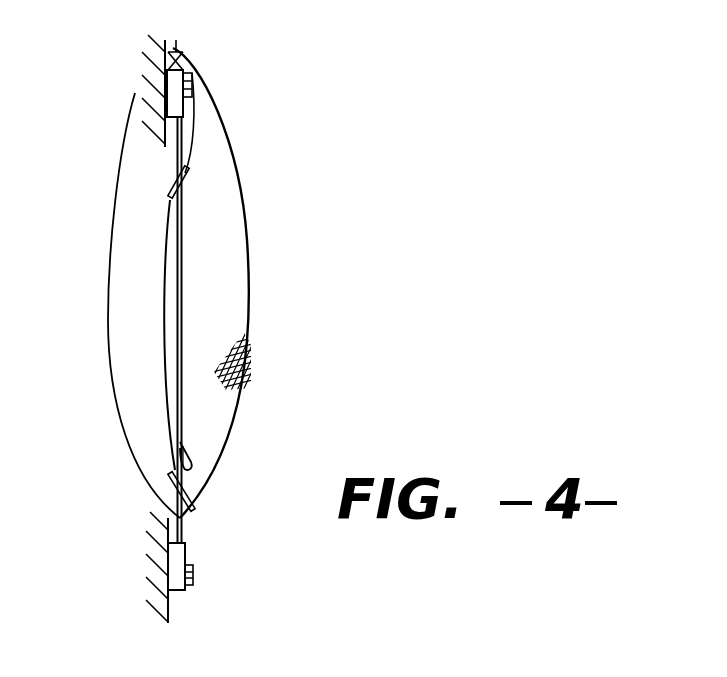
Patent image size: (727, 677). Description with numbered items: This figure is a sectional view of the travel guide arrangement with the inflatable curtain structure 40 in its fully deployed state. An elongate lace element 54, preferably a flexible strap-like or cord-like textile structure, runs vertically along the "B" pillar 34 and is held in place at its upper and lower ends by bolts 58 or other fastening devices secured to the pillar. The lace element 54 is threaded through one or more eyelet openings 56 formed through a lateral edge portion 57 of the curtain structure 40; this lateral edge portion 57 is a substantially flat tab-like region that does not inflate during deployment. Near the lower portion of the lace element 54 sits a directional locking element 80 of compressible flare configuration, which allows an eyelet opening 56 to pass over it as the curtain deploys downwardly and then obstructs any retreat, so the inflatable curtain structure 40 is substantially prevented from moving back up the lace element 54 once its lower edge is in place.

The "B" pillar 34 is at (180, 54).
The inflatable curtain structure 40 is at (247, 243).
The elongate lace element 54 is at (182, 280).
The eyelet openings 56 is at (183, 193).
The lateral edge portion 57 is at (162, 275).
The bolts 58 is at (190, 78).
The directional locking element 80 is at (198, 440).